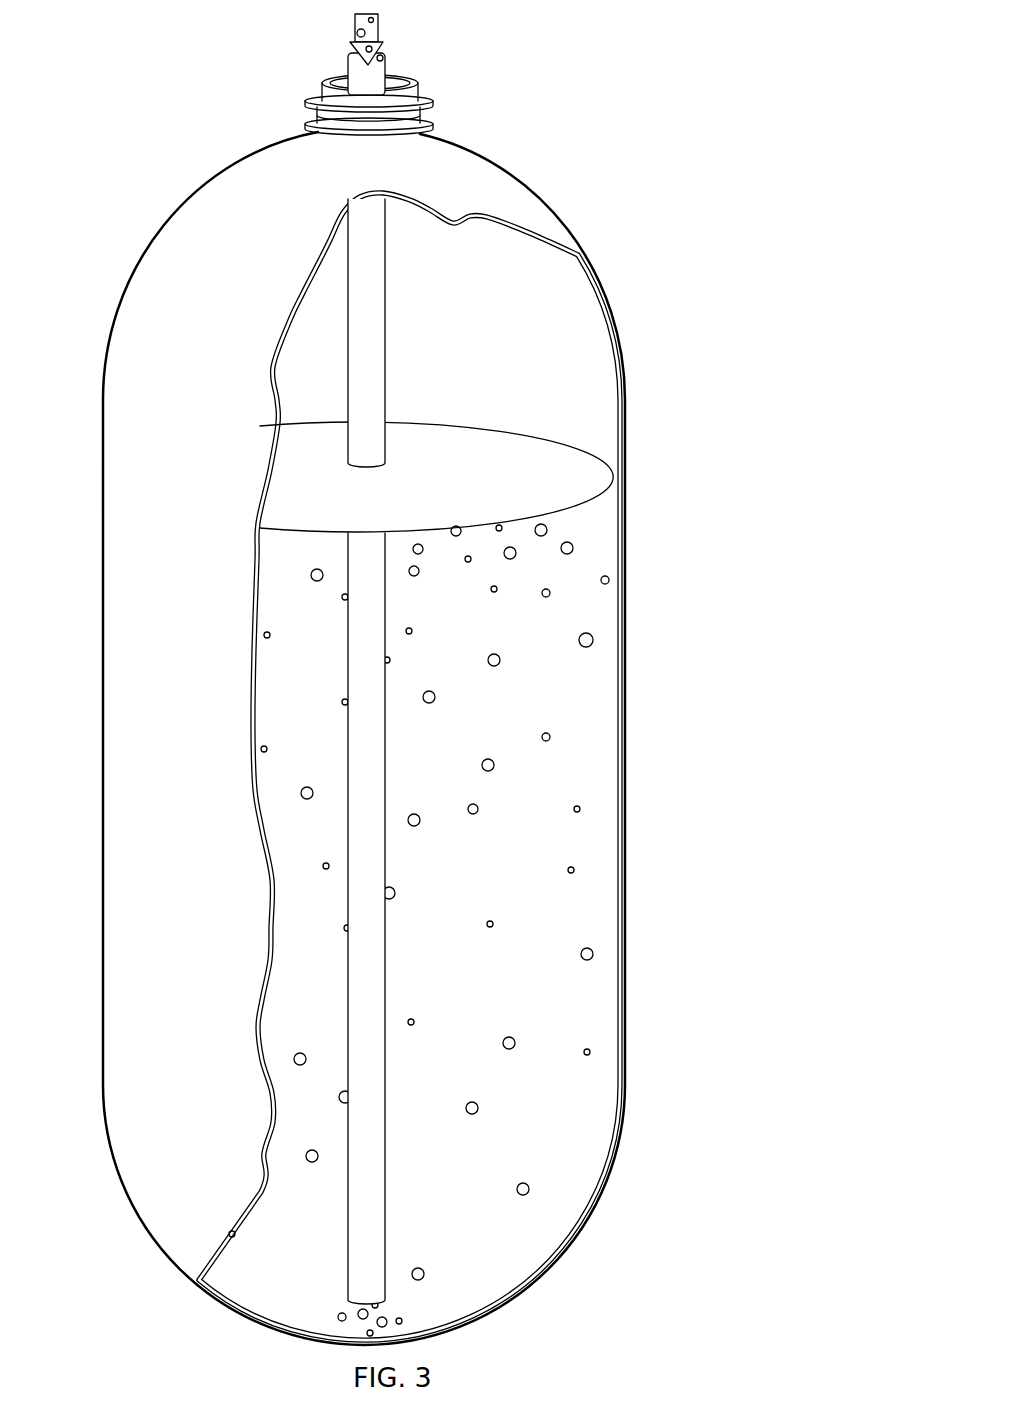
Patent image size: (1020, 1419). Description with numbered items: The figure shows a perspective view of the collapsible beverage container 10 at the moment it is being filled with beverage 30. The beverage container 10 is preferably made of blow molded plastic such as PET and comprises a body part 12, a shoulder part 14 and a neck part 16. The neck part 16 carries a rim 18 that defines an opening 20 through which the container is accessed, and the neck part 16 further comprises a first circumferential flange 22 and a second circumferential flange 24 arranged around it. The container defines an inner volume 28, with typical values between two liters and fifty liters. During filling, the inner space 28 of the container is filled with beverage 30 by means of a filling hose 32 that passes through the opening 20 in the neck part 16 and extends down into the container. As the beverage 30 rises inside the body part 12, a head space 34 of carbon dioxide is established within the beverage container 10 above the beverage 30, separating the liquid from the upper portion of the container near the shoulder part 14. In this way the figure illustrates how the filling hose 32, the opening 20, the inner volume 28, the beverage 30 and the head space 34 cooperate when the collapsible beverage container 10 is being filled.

The collapsible beverage container 10 is at (439, 679).
The body part 12 is at (622, 369).
The shoulder part 14 is at (508, 170).
The neck part 16 is at (442, 72).
The rim 18 is at (392, 73).
The opening 20 is at (412, 83).
The first circumferential flange 22 is at (436, 92).
The second circumferential flange 24 is at (437, 115).
The inner volume 28 is at (525, 628).
The beverage 30 is at (560, 569).
The filling hose 32 is at (378, 238).
The head space 34 is at (522, 368).